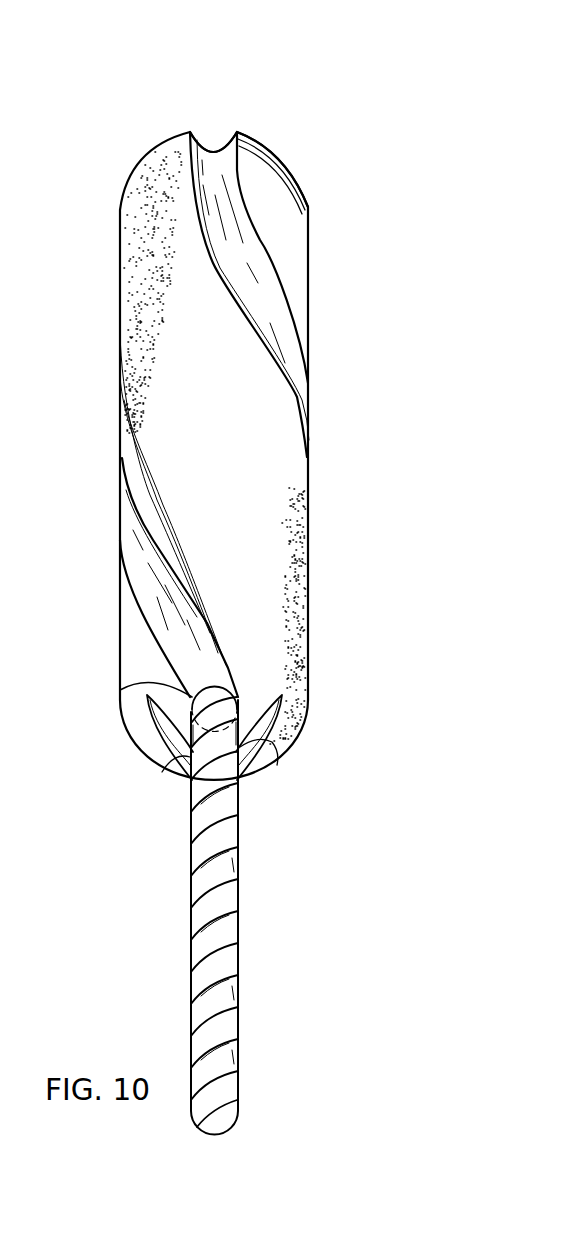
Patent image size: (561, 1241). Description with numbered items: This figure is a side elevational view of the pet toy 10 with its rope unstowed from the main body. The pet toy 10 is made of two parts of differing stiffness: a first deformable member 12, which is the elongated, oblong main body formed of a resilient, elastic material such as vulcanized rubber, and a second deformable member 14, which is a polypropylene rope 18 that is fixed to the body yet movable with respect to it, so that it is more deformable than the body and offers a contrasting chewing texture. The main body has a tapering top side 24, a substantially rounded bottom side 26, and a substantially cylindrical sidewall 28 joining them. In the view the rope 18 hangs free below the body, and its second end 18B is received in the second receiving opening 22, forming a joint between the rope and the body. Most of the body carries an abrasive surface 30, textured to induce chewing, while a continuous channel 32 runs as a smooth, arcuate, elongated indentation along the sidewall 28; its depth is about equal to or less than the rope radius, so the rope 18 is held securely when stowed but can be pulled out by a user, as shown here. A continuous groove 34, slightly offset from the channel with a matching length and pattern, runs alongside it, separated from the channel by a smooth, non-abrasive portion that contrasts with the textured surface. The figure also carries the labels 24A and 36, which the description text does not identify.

The pet toy 10 is at (307, 92).
The first deformable member 12 is at (310, 204).
The second deformable member 14 is at (190, 958).
The rope 18 is at (238, 900).
The second end 18B is at (120, 690).
The second receiving opening 22 is at (233, 702).
The top side 24 is at (192, 780).
The prongs 24A is at (167, 777).
The bottom side 26 is at (213, 150).
The cylindrical sidewall 28 is at (237, 540).
The abrasive surface 30 is at (286, 648).
The continuous channel 32 is at (300, 398).
The continuous groove 34 is at (283, 172).
The flute surface 36 is at (300, 297).